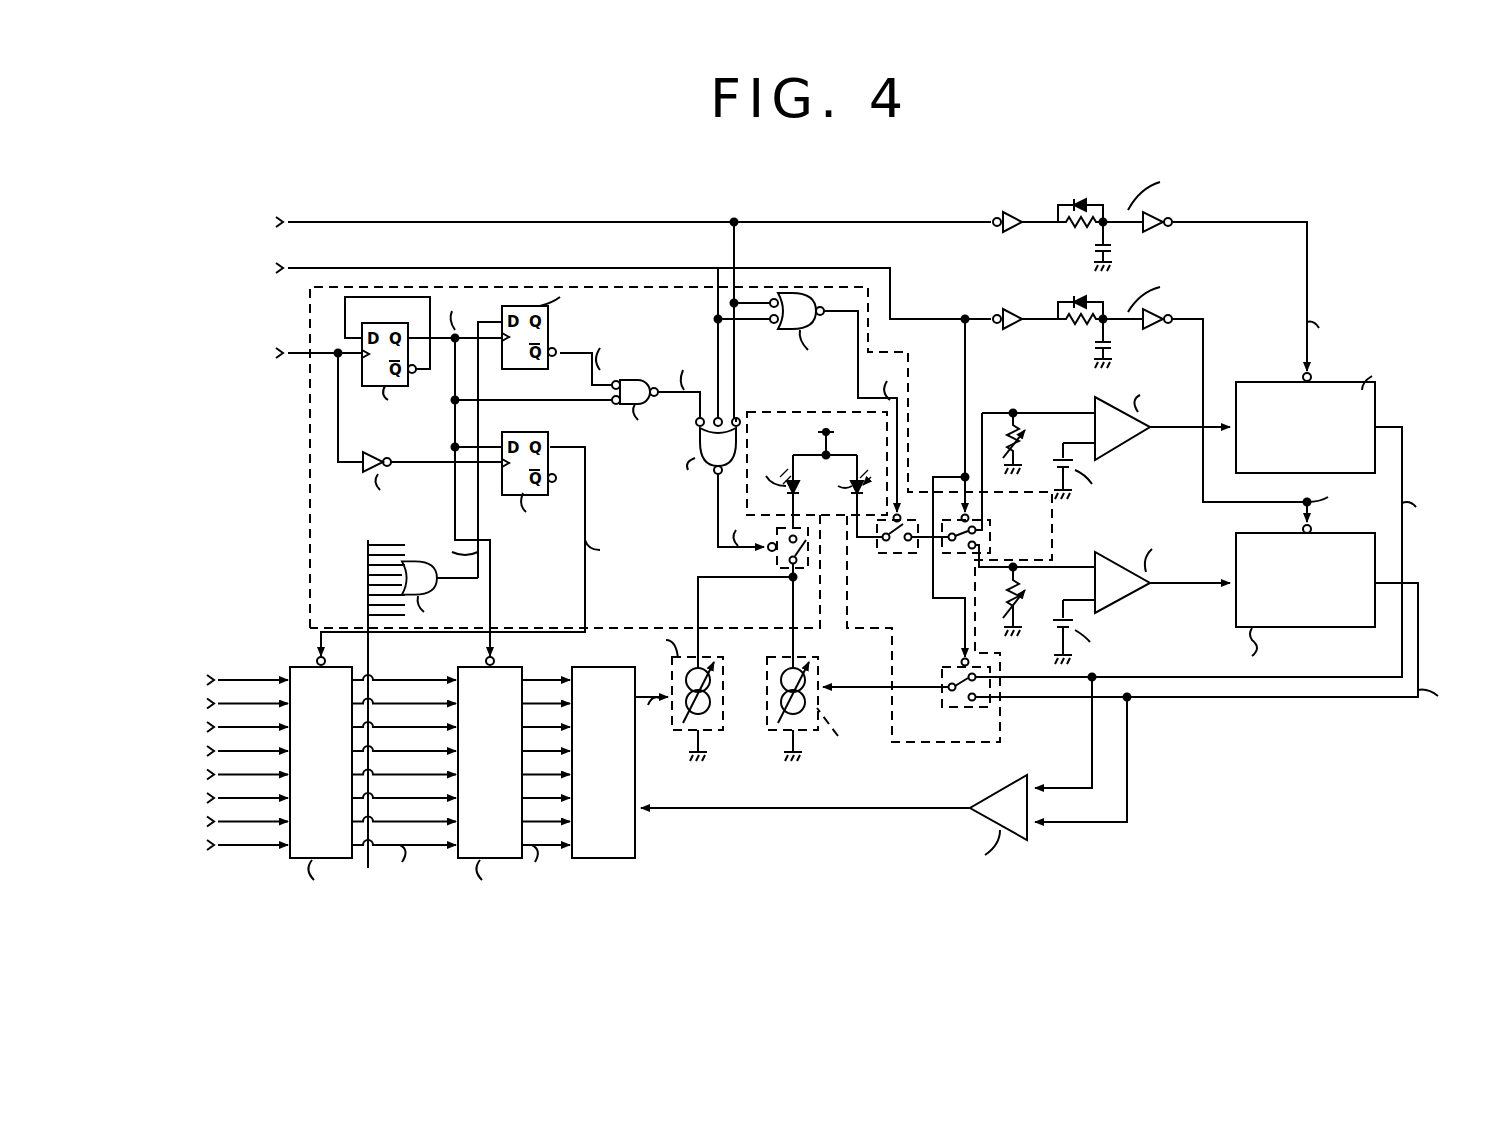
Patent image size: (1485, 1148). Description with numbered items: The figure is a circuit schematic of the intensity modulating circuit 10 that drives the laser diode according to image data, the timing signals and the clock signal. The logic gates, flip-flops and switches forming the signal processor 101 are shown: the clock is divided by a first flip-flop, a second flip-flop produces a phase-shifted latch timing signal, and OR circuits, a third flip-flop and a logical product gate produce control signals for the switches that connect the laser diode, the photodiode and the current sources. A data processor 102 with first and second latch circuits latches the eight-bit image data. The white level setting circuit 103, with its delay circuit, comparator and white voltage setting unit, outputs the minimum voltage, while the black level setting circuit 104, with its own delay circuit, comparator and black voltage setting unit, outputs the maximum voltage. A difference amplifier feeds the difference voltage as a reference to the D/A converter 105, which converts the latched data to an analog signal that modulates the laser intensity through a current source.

The intensity modulating circuit 10 is at (890, 165).
The signal processor 101 is at (310, 500).
The data processor 102 is at (412, 898).
The white level setting circuit 103 is at (1355, 352).
The black level setting circuit 104 is at (1323, 705).
The D/A converter 105 is at (648, 862).